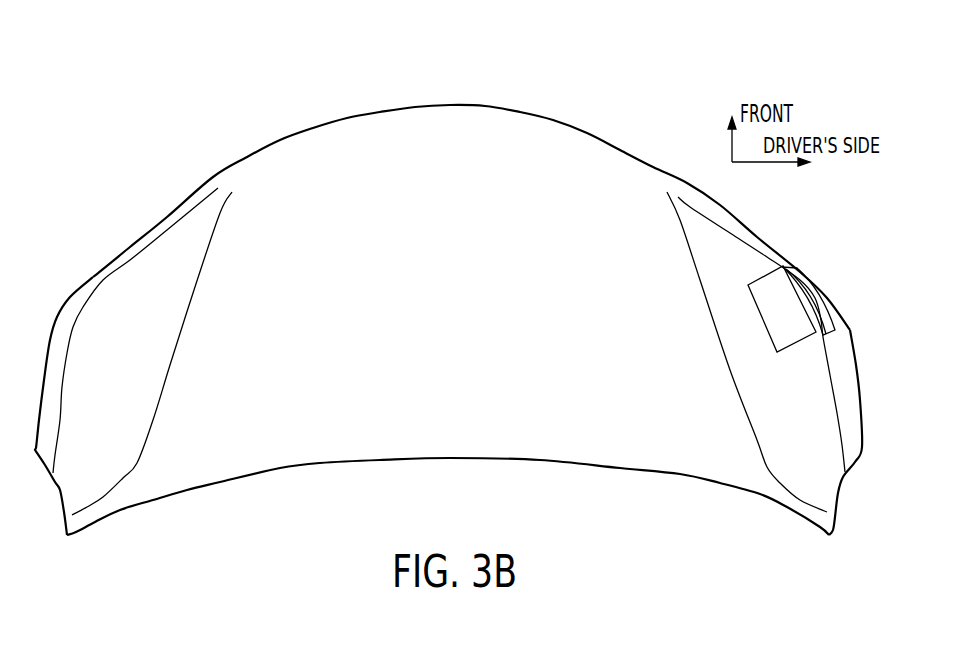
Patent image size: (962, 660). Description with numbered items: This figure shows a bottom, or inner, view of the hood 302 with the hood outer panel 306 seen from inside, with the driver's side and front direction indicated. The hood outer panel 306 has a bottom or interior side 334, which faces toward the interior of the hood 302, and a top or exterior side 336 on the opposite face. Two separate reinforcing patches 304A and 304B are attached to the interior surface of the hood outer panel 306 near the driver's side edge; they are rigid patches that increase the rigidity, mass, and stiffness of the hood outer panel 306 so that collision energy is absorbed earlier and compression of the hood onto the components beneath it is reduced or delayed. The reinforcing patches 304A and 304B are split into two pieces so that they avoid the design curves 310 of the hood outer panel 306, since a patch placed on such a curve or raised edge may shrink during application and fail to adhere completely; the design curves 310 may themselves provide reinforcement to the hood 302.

The hood 302 is at (466, 290).
The hood outer panel 306 is at (130, 257).
The design curves 310 is at (782, 352).
The reinforcing patch 304A is at (777, 293).
The reinforcing patch 304B is at (818, 318).
The bottom side of the hood outer panel 334 is at (457, 147).
The top side of the hood outer panel 336 is at (552, 118).